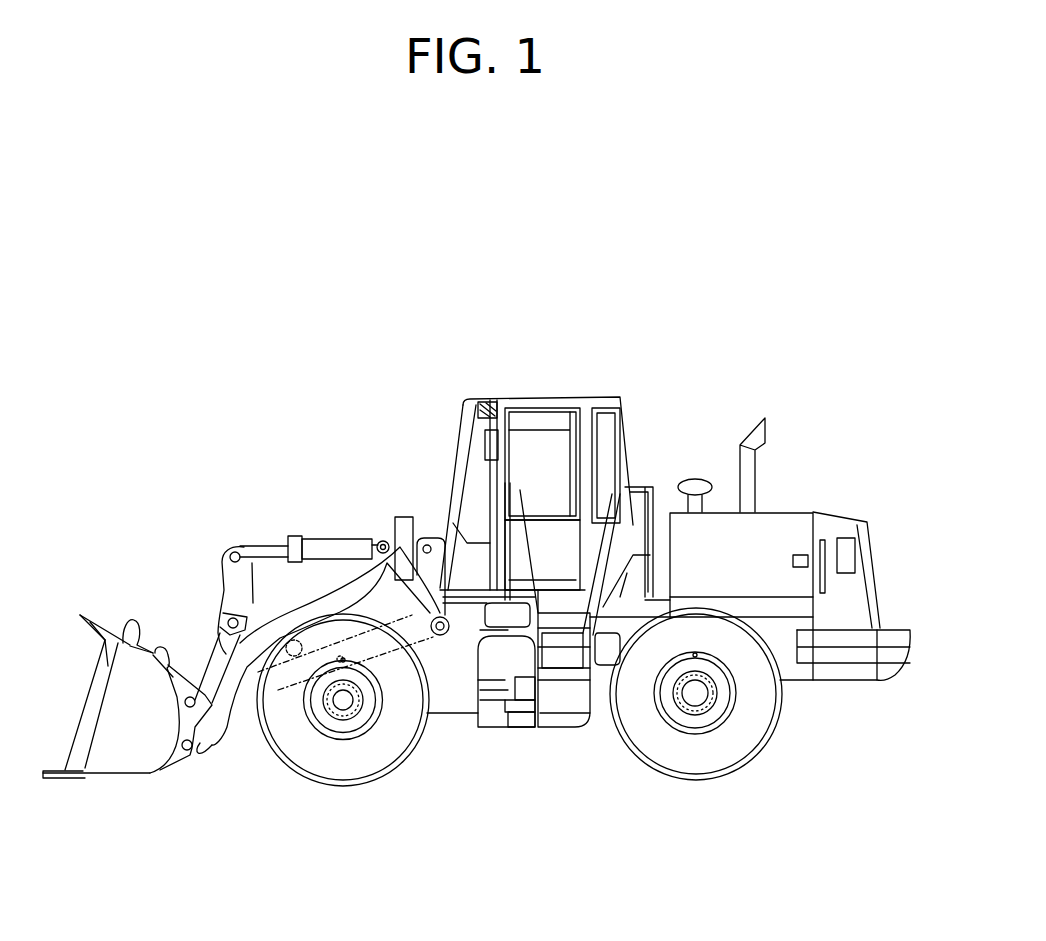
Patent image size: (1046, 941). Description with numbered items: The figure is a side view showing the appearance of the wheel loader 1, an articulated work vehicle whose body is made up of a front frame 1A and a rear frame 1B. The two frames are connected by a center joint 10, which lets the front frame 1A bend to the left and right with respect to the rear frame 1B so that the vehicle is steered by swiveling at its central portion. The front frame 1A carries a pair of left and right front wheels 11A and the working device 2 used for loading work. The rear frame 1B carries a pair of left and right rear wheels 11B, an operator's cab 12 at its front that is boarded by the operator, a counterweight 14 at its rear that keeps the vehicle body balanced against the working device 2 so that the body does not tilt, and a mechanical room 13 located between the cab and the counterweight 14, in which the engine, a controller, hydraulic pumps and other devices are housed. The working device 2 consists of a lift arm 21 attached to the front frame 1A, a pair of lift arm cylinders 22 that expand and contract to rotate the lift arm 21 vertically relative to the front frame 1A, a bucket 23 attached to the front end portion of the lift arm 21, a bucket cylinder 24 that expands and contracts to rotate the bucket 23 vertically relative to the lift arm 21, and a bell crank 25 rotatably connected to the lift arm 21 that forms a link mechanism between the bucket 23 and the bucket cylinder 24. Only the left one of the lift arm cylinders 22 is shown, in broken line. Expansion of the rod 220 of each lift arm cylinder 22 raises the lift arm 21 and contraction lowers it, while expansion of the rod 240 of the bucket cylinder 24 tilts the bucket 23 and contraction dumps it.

The wheel loader 1 is at (502, 596).
The front frame 1A is at (289, 622).
The rear frame 1B is at (700, 593).
The working device 2 is at (246, 669).
The center joint 10 is at (481, 709).
The front wheels 11A is at (343, 731).
The rear wheels 11B is at (696, 740).
The operator's cab 12 is at (546, 475).
The mechanical room 13 is at (762, 549).
The counterweight 14 is at (870, 626).
The lift arm 21 is at (304, 654).
The lift arm cylinders 22 is at (345, 662).
The rod 220 is at (304, 680).
The bucket 23 is at (111, 742).
The bucket cylinder 24 is at (310, 511).
The rod 240 is at (259, 509).
The bell crank 25 is at (212, 591).